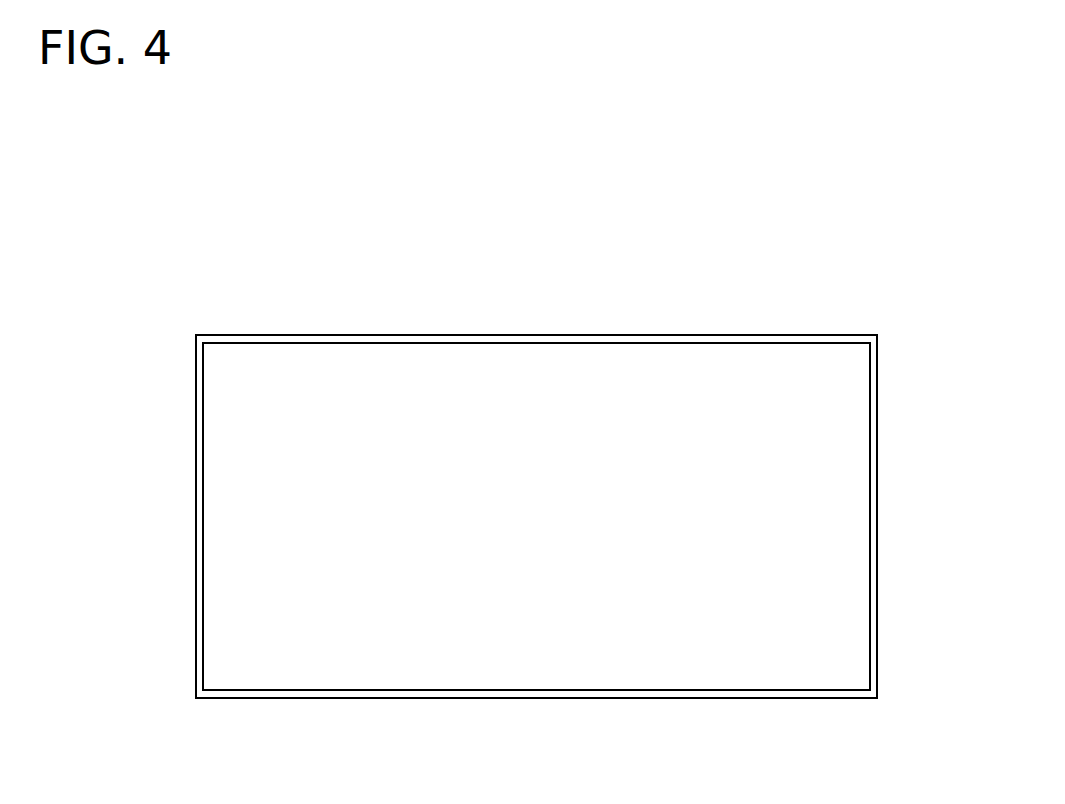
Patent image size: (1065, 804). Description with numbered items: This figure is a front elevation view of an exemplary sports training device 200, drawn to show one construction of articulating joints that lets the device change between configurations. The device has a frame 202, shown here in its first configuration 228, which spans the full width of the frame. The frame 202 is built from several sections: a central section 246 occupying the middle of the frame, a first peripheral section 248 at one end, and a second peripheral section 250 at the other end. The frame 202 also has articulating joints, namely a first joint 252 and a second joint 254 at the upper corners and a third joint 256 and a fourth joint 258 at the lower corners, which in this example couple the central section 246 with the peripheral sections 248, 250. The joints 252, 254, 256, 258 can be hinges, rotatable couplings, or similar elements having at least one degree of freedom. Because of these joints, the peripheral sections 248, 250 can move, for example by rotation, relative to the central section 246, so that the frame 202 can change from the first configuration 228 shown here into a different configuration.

The sports training device 200 is at (960, 223).
The frame 202 is at (930, 335).
The first configuration 228 is at (878, 272).
The central section 246 is at (763, 711).
The first peripheral section 248 is at (306, 711).
The second peripheral section 250 is at (878, 711).
The first joint 252 is at (303, 342).
The second joint 254 is at (766, 342).
The third joint 256 is at (303, 690).
The fourth joint 258 is at (764, 690).